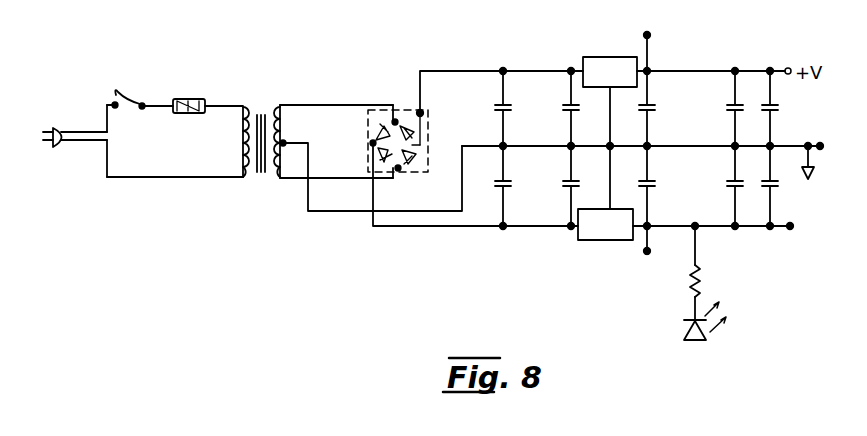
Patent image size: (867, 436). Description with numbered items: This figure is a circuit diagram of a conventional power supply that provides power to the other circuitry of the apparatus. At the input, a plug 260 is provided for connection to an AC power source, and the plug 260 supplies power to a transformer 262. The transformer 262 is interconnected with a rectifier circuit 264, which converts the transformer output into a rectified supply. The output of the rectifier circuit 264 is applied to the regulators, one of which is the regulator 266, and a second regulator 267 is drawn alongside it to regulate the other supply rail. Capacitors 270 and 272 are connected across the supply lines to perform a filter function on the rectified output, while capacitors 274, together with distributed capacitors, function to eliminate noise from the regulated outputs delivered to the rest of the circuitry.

The plug 260 is at (59, 148).
The transformer 262 is at (261, 114).
The rectifier circuit 264 is at (418, 110).
The regulator 266 is at (608, 56).
The negative voltage regulator 267 is at (606, 241).
The capacitor 270 is at (568, 105).
The capacitor 272 is at (568, 181).
The capacitors 274 is at (763, 108).